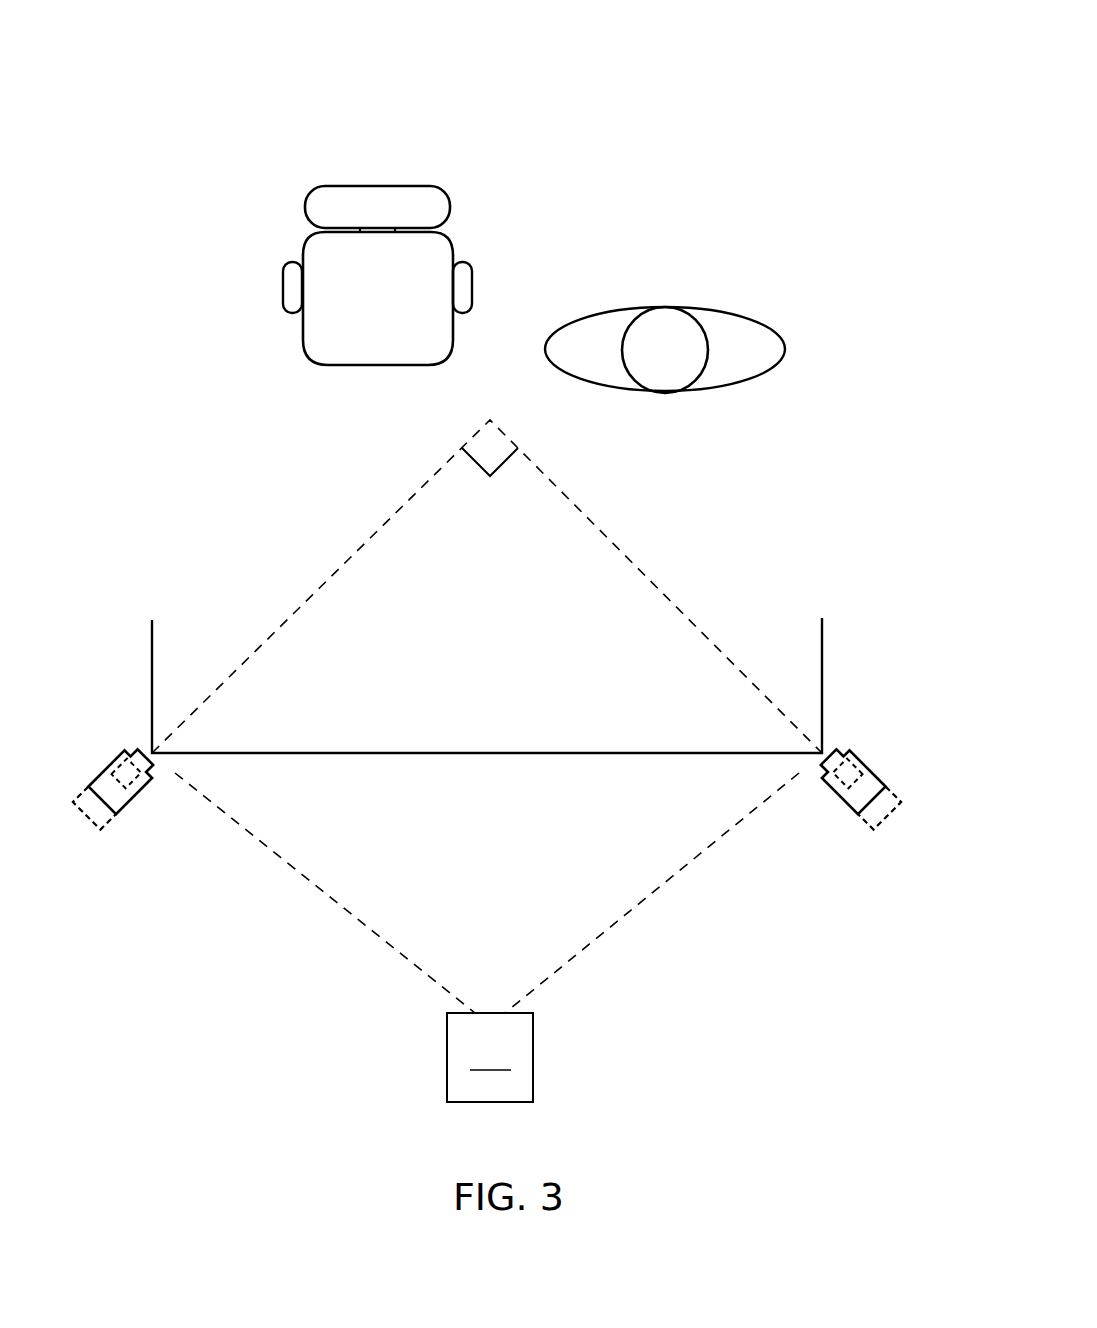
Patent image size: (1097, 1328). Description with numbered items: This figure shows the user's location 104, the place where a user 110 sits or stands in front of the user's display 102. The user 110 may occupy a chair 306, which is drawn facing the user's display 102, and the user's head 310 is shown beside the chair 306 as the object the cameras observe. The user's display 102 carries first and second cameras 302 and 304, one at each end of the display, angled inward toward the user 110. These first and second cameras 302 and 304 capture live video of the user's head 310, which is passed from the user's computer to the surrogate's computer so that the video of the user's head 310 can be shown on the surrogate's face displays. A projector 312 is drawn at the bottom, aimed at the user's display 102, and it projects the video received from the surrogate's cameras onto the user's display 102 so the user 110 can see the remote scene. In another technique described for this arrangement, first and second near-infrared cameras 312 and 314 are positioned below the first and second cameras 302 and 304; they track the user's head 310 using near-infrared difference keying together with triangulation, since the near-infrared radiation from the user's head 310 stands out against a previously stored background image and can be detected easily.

The user's location 104 is at (741, 98).
The user's display 102 is at (558, 752).
The chair 306 is at (372, 186).
The user 110 is at (717, 307).
The user's head 310 is at (657, 307).
The first camera 302 is at (118, 763).
The second camera 304 is at (862, 757).
The projector 312 is at (342, 937).
The second near-infrared camera 314 is at (665, 893).